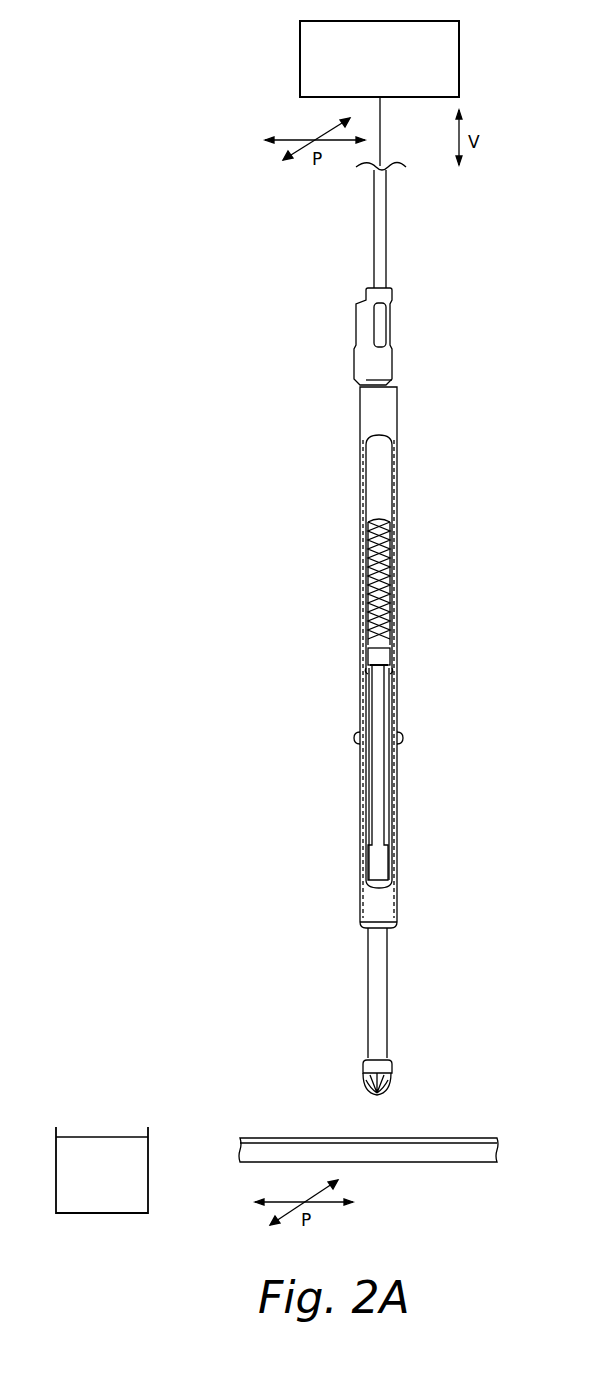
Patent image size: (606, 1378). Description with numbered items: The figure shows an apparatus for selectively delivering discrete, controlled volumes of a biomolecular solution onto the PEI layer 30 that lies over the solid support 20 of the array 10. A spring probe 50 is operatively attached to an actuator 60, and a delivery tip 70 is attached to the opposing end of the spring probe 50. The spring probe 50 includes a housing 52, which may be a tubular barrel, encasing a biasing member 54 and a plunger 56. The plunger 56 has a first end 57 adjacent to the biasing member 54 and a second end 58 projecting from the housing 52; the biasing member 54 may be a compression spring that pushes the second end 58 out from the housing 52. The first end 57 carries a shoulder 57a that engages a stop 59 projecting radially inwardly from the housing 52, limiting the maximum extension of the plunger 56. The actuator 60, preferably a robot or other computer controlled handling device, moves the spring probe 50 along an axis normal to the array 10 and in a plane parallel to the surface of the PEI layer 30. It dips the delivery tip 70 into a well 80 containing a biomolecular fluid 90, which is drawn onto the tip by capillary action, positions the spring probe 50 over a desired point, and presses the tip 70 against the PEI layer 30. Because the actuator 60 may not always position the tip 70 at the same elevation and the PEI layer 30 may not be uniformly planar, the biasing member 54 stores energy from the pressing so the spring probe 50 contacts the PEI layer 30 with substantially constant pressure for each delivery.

The array 10 is at (413, 1160).
The solid support 20 is at (466, 1160).
The PEI layer 30 is at (490, 1138).
The spring probe 50 is at (400, 603).
The housing 52 is at (386, 432).
The biasing member 54 is at (390, 568).
The plunger 56 is at (378, 982).
The first end 57 is at (391, 645).
The shoulder 57a is at (368, 667).
The second end 58 is at (390, 1052).
The stop 59 is at (395, 672).
The actuator 60 is at (459, 50).
The delivery tip 70 is at (360, 1078).
The well 80 is at (148, 1165).
The biomolecular fluid 90 is at (98, 1150).